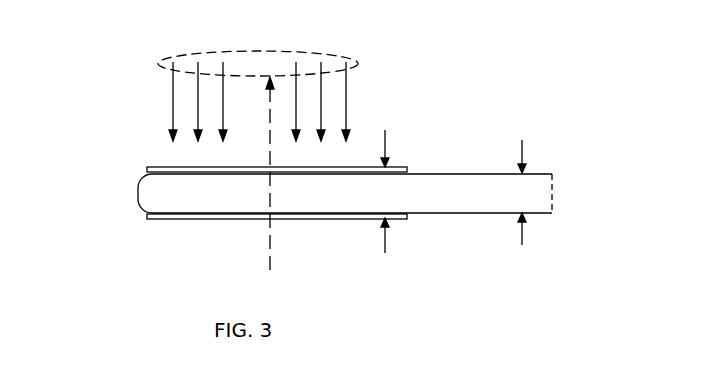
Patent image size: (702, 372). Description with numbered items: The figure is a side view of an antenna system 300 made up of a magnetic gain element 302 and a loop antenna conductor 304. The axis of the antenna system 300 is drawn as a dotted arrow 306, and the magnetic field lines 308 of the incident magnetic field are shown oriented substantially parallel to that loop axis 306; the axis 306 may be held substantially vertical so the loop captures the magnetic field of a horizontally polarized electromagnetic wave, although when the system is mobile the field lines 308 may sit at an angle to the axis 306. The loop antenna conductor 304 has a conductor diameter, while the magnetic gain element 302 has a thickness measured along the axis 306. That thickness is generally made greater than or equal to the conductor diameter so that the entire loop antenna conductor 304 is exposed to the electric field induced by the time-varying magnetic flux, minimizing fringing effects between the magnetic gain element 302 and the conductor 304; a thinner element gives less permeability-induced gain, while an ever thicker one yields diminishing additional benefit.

The antenna system 300 is at (103, 86).
The magnetic gain element 302 is at (170, 167).
The loop antenna conductor 304 is at (490, 213).
The axis of the antenna system 306 is at (258, 244).
The magnetic field lines 308 is at (293, 51).